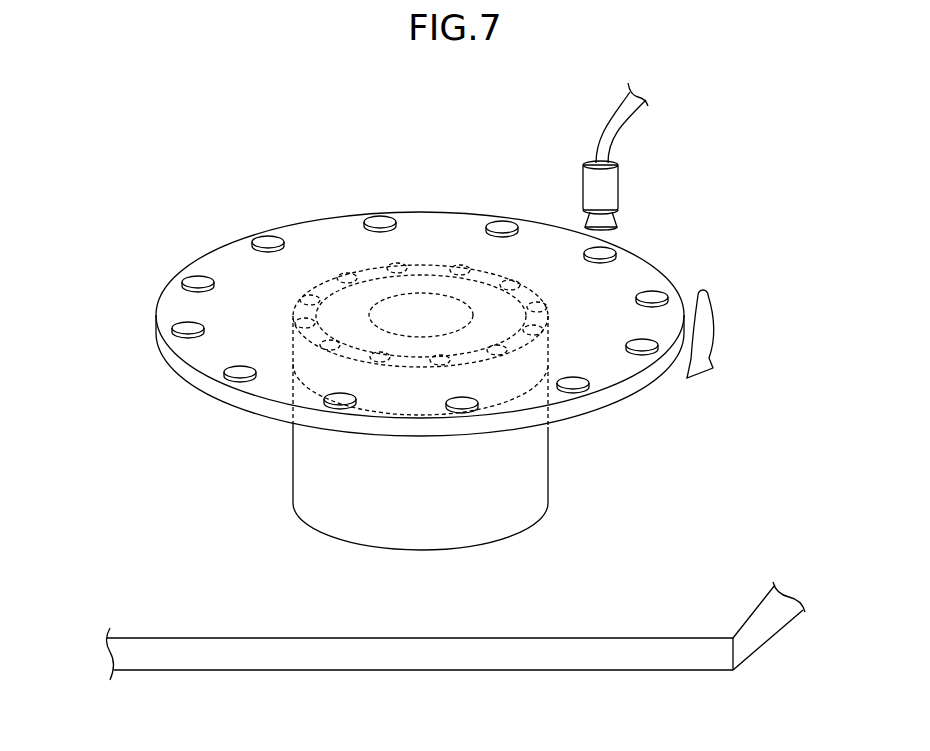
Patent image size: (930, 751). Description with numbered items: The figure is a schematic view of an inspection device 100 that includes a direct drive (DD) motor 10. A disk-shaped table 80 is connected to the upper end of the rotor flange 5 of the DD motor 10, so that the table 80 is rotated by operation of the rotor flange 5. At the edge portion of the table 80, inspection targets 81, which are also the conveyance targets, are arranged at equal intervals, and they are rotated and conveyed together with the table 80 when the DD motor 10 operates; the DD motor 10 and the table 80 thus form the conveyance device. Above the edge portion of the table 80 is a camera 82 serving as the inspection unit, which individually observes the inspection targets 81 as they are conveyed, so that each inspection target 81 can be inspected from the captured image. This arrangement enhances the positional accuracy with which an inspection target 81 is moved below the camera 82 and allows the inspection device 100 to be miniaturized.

The rotor flange 5 is at (330, 280).
The DD motor 10 is at (534, 471).
The table 80 is at (218, 268).
The inspection targets 81 is at (655, 292).
The camera 82 is at (613, 189).
The inspection device 100 is at (710, 172).